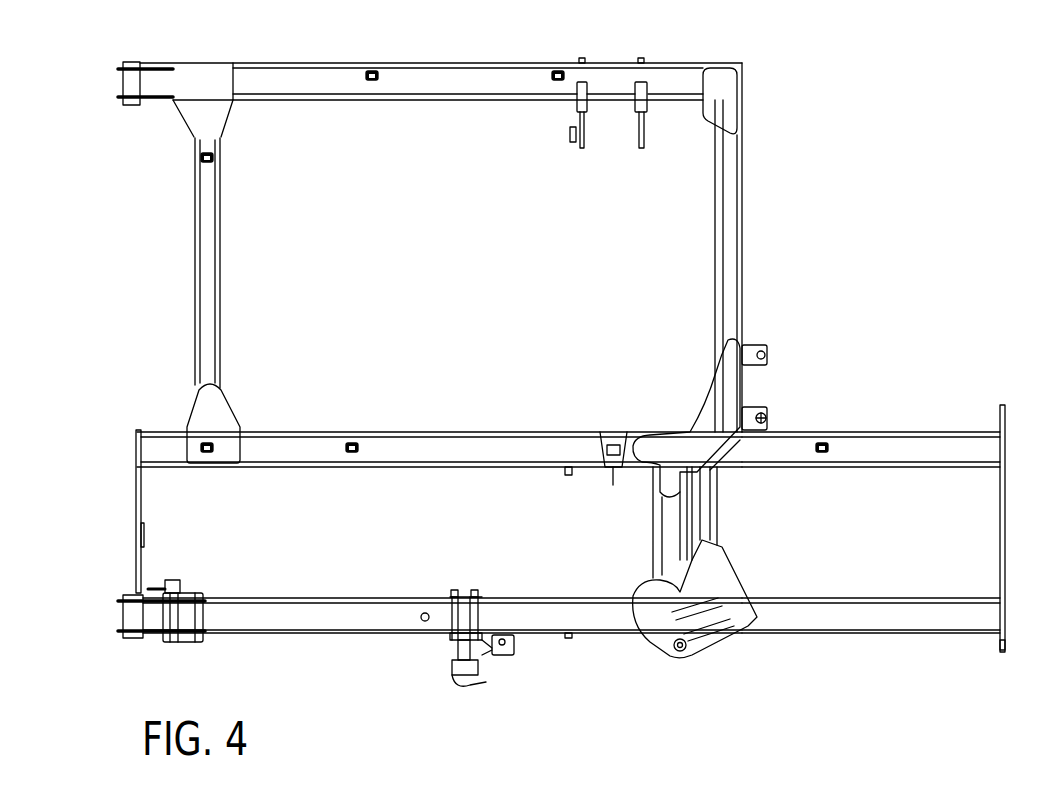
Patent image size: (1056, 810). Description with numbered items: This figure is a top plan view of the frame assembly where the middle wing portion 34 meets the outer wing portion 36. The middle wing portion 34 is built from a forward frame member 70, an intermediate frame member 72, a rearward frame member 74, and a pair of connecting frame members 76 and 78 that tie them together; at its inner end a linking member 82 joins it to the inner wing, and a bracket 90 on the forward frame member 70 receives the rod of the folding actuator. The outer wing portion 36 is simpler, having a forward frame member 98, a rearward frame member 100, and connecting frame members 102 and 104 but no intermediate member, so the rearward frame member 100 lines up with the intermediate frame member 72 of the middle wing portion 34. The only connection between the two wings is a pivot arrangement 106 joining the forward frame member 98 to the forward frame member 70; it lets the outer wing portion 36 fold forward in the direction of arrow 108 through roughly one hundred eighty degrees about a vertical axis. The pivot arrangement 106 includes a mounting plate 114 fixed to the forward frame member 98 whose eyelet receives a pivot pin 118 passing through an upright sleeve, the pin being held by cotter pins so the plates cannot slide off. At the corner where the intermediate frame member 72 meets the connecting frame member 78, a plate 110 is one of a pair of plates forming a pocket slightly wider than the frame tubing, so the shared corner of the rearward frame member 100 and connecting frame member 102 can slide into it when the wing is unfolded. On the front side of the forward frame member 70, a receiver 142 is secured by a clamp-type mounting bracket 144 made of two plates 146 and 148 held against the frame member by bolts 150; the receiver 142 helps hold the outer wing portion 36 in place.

The middle wing portion 34 is at (343, 661).
The outer wing portion 36 is at (866, 661).
The forward frame member 70 is at (560, 610).
The intermediate frame member 72 is at (474, 444).
The rearward frame member 74 is at (293, 78).
The connecting frame member 76 is at (218, 229).
The connecting frame member 78 is at (731, 225).
The linking member 82 is at (140, 67).
The bracket 90 is at (181, 640).
The forward frame member 98 is at (977, 623).
The rearward frame member 100 is at (872, 452).
The connecting frame member 102 is at (706, 490).
The connecting frame member 104 is at (1001, 565).
The pivot arrangement 106 is at (660, 660).
The arrow 108 is at (722, 739).
The plate 110 is at (715, 430).
The mounting plate 114 is at (728, 580).
The pivot pin 118 is at (686, 652).
The receiver 142 is at (458, 668).
The mounting bracket 144 is at (491, 613).
The plate 146 is at (480, 652).
The plate 148 is at (463, 595).
The bolts 150 is at (470, 603).